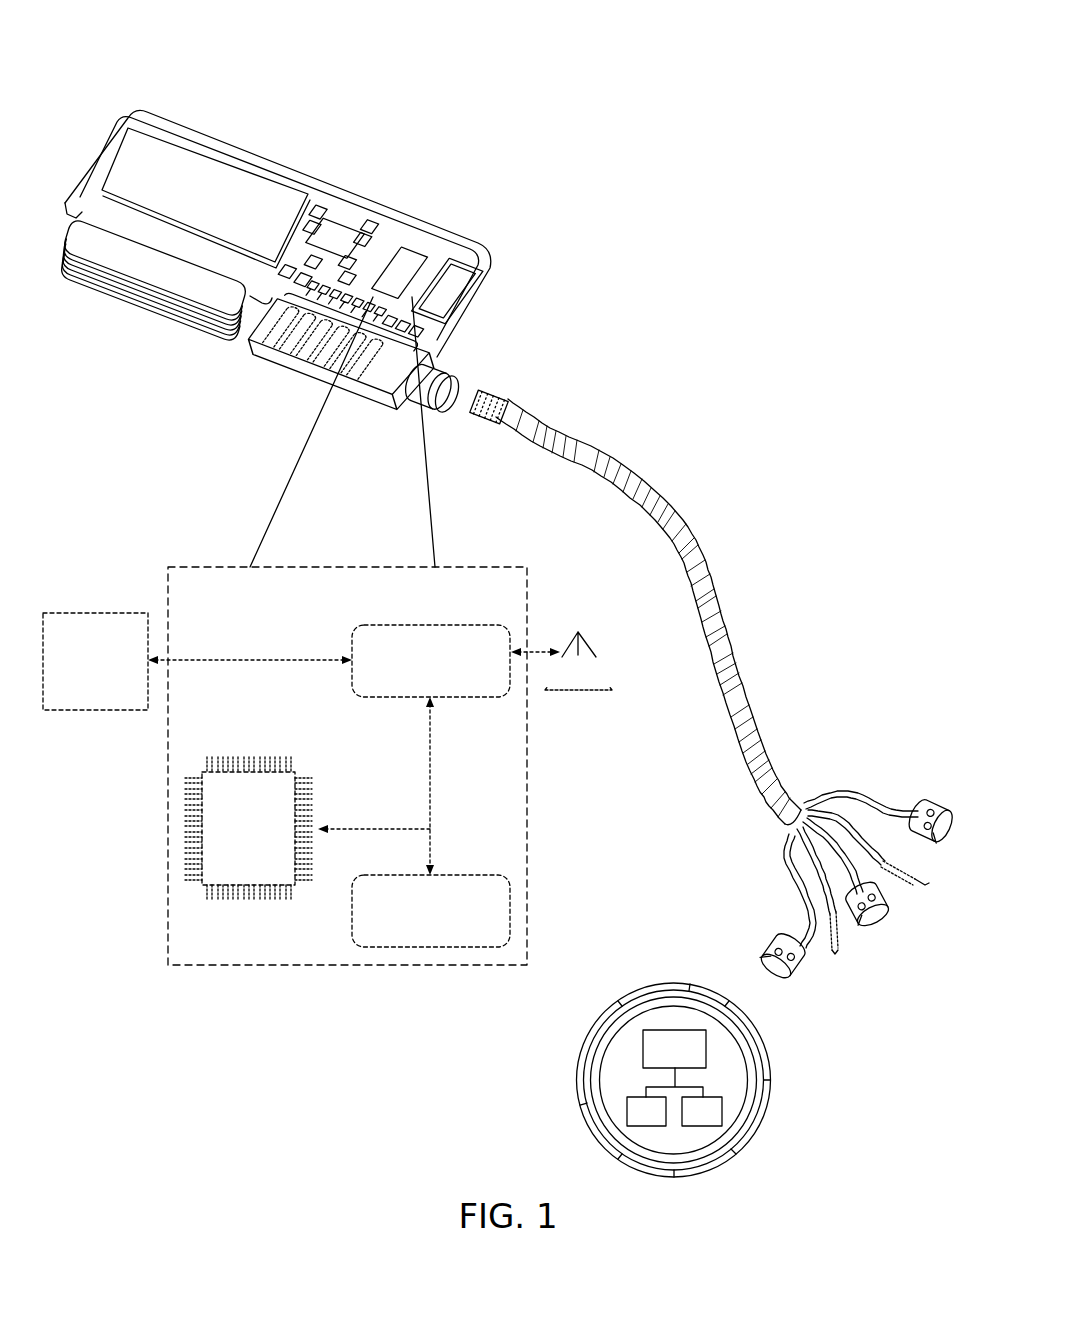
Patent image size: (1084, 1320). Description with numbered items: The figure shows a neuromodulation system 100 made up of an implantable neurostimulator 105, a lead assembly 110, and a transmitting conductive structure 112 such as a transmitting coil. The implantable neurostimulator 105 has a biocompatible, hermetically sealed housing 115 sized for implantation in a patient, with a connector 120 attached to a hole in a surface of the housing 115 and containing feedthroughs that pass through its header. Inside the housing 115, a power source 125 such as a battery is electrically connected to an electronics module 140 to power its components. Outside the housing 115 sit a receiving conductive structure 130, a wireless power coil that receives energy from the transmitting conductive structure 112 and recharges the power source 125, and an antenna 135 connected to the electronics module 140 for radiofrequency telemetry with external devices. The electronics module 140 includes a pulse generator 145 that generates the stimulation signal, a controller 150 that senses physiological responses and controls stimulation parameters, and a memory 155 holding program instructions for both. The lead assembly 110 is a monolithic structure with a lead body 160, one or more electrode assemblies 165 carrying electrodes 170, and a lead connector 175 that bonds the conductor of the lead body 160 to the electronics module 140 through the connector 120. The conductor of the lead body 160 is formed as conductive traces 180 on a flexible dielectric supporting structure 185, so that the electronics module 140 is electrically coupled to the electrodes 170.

The neuromodulation system 100 is at (852, 80).
The implantable neurostimulator 105 is at (384, 157).
The lead assembly 110 is at (726, 690).
The transmitting conductive structure 112 is at (788, 1056).
The housing 115 is at (168, 120).
The connector 120 is at (290, 345).
The power source 125 is at (233, 197).
The receiving conductive structure 130 is at (147, 280).
The antenna 135 is at (67, 203).
The electronics module 140 is at (418, 243).
The pulse generator 145 is at (431, 661).
The controller 150 is at (248, 828).
The memory 155 is at (431, 911).
The lead body 160 is at (740, 645).
The electrode assemblies 165 is at (853, 772).
The electrodes 170 is at (785, 947).
The lead connector 175 is at (487, 400).
The conductive traces 180 is at (648, 612).
The supporting structure 185 is at (655, 490).